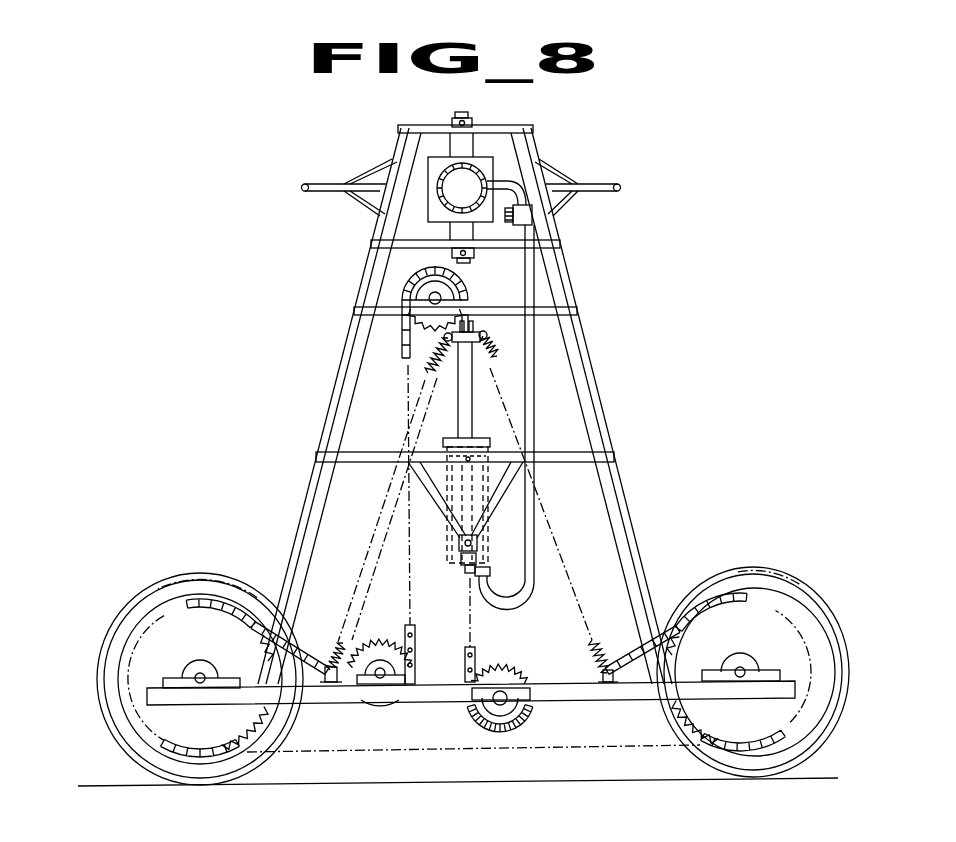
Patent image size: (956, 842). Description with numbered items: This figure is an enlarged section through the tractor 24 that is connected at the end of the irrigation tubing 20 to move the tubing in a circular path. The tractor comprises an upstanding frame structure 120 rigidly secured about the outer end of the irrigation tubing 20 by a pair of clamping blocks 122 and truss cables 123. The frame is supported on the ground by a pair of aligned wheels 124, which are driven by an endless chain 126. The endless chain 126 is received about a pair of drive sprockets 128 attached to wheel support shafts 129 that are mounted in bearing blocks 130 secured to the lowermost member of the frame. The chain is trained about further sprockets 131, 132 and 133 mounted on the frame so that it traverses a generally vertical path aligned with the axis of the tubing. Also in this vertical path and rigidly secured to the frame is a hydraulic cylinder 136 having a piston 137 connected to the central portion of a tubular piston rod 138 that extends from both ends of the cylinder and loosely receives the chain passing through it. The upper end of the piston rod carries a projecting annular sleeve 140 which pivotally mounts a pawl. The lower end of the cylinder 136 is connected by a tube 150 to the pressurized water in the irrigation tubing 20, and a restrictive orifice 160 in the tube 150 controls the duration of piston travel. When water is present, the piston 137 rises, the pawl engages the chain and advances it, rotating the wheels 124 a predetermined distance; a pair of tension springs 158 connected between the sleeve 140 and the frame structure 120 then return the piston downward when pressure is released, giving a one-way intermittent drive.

The irrigation tubing 20 is at (481, 168).
The tractor 24 is at (489, 404).
The frame structure 120 is at (620, 443).
The clamping blocks 122 is at (437, 210).
The truss cables 123 is at (331, 185).
The wheels 124 is at (186, 585).
The endless chain 126 is at (402, 342).
The drive sprockets 128 is at (258, 727).
The wheel support shafts 129 is at (203, 674).
The bearing blocks 130 is at (184, 671).
The sprocket 131 is at (390, 638).
The sprocket 132 is at (418, 321).
The sprocket 133 is at (508, 658).
The hydraulic cylinder 136 is at (448, 547).
The piston 137 is at (510, 437).
The tubular piston rod 138 is at (465, 403).
The annular sleeve 140 is at (481, 330).
The tube 150 is at (528, 483).
The tension springs 158 is at (428, 369).
The restrictive orifice 160 is at (533, 216).